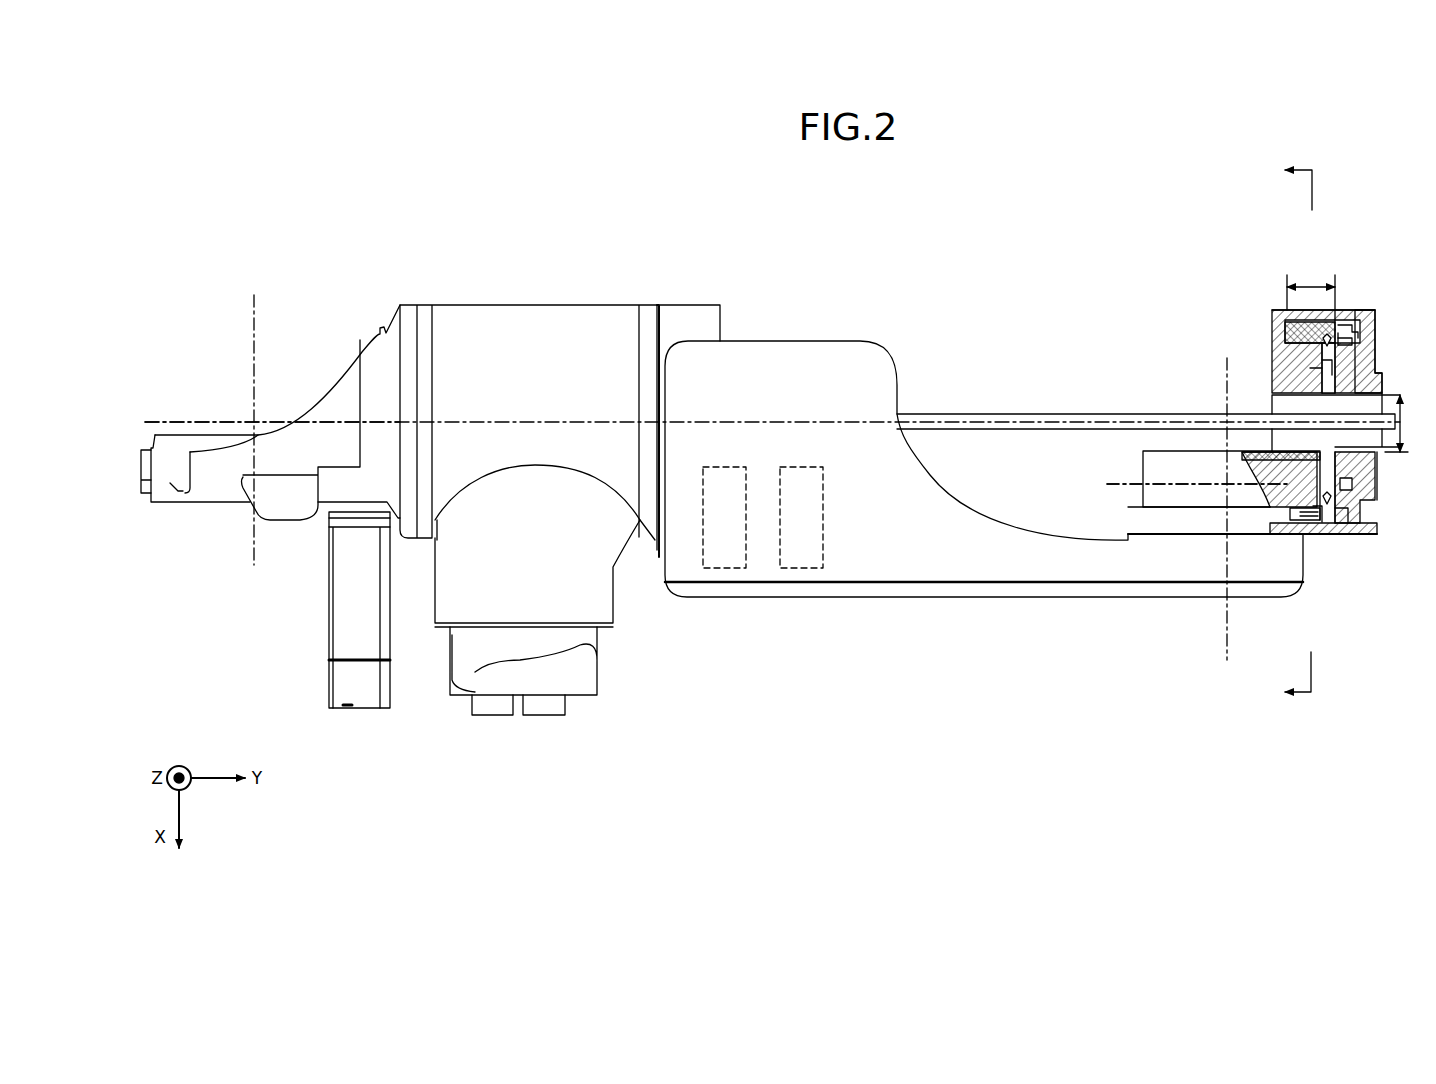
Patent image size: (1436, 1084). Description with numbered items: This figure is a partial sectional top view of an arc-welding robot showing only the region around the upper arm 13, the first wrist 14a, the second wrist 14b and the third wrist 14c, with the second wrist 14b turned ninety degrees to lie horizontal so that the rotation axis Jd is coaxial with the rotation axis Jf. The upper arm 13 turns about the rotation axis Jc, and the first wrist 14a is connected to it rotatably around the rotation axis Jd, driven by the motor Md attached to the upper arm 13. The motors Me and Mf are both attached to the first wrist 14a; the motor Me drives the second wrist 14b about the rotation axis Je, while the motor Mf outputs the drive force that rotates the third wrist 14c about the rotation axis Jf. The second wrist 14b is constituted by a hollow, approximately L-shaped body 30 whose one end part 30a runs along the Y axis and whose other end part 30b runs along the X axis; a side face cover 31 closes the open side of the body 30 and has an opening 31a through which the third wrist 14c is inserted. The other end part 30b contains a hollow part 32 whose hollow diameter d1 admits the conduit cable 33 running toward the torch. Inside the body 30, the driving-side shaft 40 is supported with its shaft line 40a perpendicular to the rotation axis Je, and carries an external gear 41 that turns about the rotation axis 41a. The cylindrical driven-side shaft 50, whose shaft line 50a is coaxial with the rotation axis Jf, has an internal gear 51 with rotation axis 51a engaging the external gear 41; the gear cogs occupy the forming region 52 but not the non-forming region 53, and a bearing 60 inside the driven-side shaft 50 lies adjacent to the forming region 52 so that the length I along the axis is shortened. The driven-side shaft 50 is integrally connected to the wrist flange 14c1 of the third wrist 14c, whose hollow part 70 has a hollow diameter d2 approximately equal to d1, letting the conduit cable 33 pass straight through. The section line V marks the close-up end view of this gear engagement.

The upper arm 13 is at (490, 304).
The first wrist 14a is at (790, 340).
The second wrist 14b is at (1275, 310).
The third wrist 14c is at (1378, 362).
The wrist flange 14c1 is at (1370, 524).
The body 30 is at (1268, 320).
The one end part 30a is at (1143, 465).
The other end part 30b is at (1282, 331).
The side face cover 31 is at (1360, 305).
The opening 31a is at (1372, 316).
The hollow part 32 is at (1272, 404).
The conduit cable 33 is at (1003, 413).
The driving-side shaft 40 is at (1270, 497).
The shaft line 40a is at (1155, 487).
The external gear 41 is at (1290, 515).
The rotation axis 41a is at (1164, 647).
The driven-side shaft 50 is at (1305, 515).
The internal gear 51 is at (1303, 520).
The forming region 52 is at (1313, 528).
The non-forming region 53 is at (1318, 522).
The bearing 60 is at (1332, 527).
The hollow part 70 is at (1378, 470).
The rotation axis Jc is at (254, 318).
The rotation axis Jd is at (185, 420).
The rotation axis Je is at (1227, 375).
The rotation axis Jf is at (1397, 440).
The shaft line 50a is at (1411, 483).
The rotation axis 51a is at (1411, 500).
The motor Md is at (329, 622).
The motor Me is at (800, 568).
The motor Mf is at (725, 568).
The hollow diameter d1 is at (1401, 395).
The hollow diameter d2 is at (1412, 375).
The length I is at (1311, 293).
The line V- V is at (1300, 434).